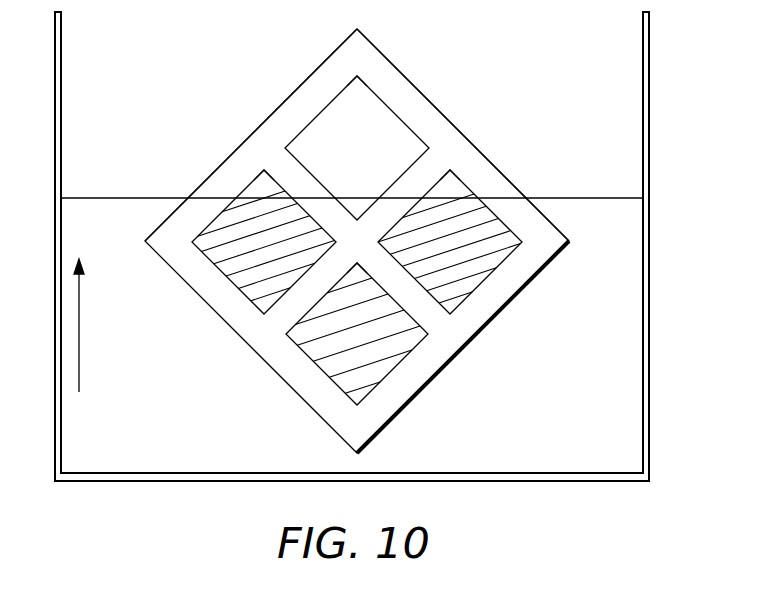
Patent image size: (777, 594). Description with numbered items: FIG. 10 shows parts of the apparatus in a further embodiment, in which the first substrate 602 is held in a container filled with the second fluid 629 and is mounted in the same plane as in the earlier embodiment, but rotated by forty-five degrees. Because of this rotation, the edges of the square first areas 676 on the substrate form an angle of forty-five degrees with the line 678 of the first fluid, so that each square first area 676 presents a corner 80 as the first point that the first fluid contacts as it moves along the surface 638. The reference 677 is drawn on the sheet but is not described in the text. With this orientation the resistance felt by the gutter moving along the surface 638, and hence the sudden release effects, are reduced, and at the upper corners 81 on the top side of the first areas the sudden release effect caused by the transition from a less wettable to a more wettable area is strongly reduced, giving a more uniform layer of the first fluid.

The first substrate 602 is at (448, 118).
The frame upper-left side 677 is at (300, 100).
The surface 638 is at (493, 182).
The square first area 676 is at (377, 128).
The corner 80 is at (363, 222).
The upper corner 81 is at (357, 75).
The line of the first fluid 678 is at (563, 198).
The second fluid 629 is at (612, 338).